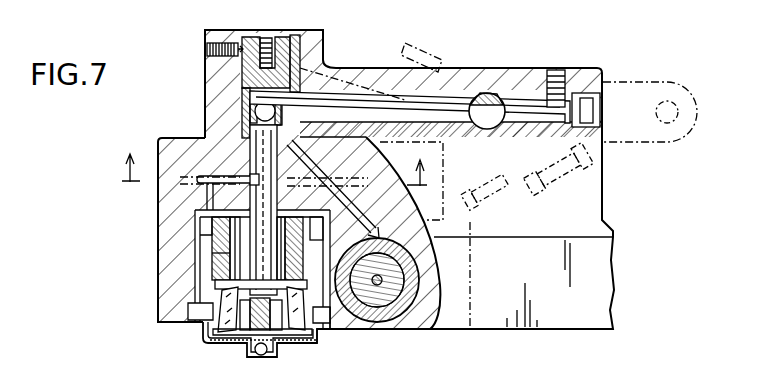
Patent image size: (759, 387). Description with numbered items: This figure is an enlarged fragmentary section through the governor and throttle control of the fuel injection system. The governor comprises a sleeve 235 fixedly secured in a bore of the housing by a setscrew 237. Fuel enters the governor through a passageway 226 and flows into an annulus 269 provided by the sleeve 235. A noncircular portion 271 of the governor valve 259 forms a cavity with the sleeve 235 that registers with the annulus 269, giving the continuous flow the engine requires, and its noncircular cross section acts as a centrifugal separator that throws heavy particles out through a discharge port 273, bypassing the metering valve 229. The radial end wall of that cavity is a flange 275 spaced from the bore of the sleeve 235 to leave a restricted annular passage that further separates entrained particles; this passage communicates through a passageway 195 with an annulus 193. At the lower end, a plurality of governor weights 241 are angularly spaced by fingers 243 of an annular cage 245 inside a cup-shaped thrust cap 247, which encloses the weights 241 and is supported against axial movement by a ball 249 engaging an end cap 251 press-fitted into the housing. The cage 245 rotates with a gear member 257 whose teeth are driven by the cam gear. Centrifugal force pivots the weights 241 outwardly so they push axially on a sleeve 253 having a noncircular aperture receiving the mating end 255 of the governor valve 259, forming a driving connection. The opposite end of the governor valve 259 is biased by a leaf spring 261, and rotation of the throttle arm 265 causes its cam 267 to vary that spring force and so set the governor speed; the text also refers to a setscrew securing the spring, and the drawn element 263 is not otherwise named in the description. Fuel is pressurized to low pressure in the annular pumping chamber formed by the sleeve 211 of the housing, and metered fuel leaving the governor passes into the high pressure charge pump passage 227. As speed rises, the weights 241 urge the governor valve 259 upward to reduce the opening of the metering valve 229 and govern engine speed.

The setscrew 237 is at (207, 47).
The sleeve 235 is at (240, 92).
The annulus 193 is at (250, 128).
The passageway 195 is at (236, 123).
The flange 275 is at (236, 163).
The discharge port 273 is at (210, 182).
The noncircular portion 271 is at (206, 213).
The governor valve 259 is at (256, 222).
The gear member 257 is at (235, 247).
The annular cage 245 is at (228, 290).
The fingers 243 is at (190, 306).
The end cap 251 is at (203, 332).
The cup-shaped thrust cap 247 is at (203, 340).
The mating end 255 is at (245, 340).
The ball 249 is at (268, 355).
The sleeve 253 is at (307, 342).
The governor weights 241 is at (307, 337).
The sleeve 211 is at (400, 300).
The high pressure charge pump passage 227 is at (460, 230).
The annulus 269 is at (305, 153).
The passageway 226 is at (330, 178).
The metering valve 229 is at (292, 132).
The leaf spring 261 is at (388, 92).
The cam 267 is at (478, 93).
The spring 263 is at (560, 70).
The throttle arm 265 is at (627, 82).